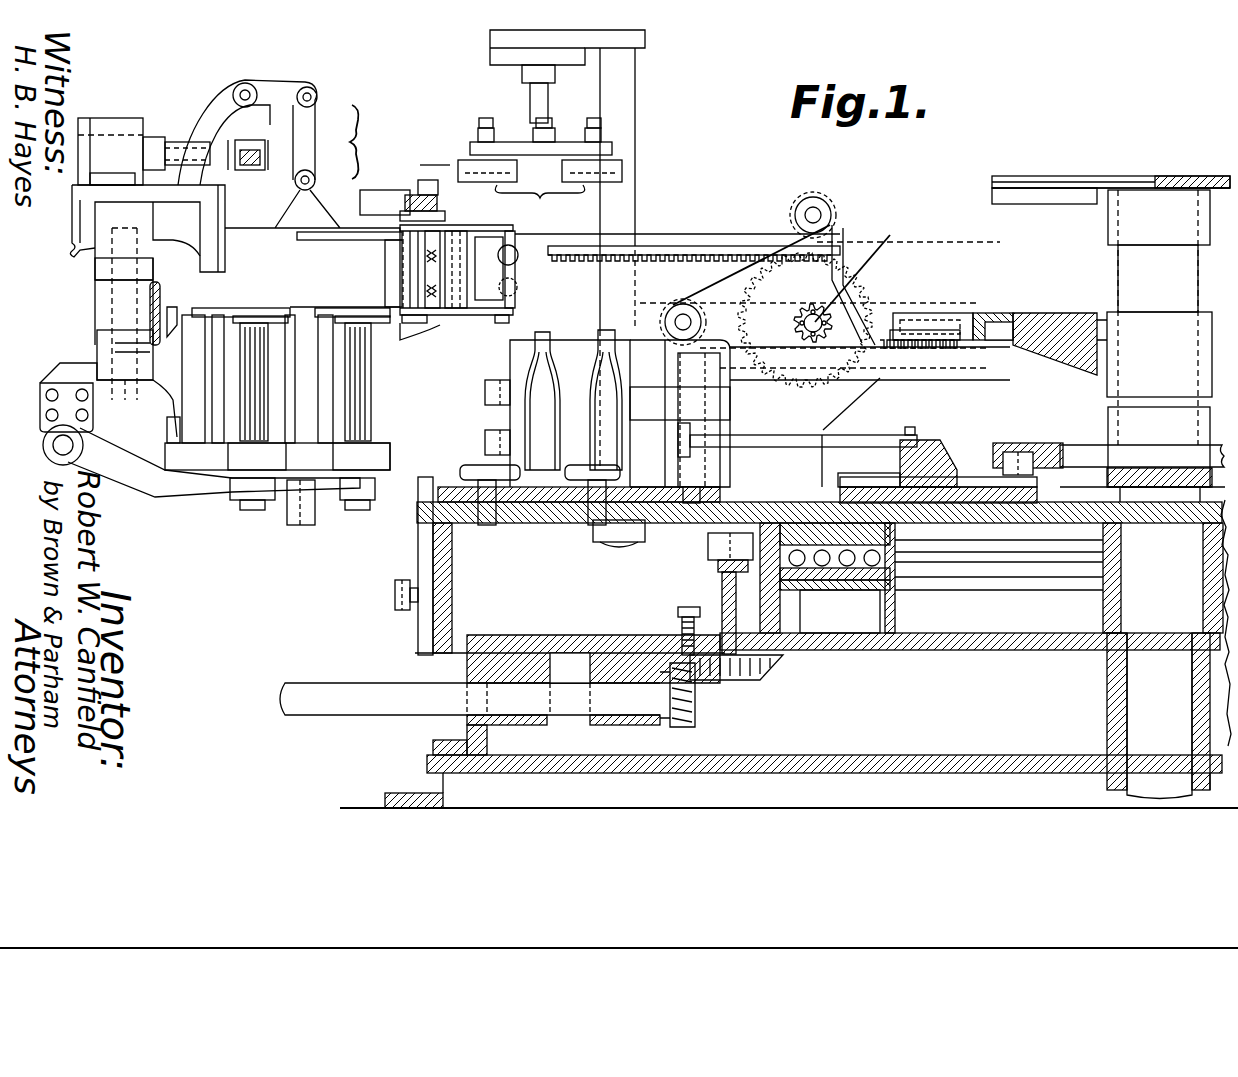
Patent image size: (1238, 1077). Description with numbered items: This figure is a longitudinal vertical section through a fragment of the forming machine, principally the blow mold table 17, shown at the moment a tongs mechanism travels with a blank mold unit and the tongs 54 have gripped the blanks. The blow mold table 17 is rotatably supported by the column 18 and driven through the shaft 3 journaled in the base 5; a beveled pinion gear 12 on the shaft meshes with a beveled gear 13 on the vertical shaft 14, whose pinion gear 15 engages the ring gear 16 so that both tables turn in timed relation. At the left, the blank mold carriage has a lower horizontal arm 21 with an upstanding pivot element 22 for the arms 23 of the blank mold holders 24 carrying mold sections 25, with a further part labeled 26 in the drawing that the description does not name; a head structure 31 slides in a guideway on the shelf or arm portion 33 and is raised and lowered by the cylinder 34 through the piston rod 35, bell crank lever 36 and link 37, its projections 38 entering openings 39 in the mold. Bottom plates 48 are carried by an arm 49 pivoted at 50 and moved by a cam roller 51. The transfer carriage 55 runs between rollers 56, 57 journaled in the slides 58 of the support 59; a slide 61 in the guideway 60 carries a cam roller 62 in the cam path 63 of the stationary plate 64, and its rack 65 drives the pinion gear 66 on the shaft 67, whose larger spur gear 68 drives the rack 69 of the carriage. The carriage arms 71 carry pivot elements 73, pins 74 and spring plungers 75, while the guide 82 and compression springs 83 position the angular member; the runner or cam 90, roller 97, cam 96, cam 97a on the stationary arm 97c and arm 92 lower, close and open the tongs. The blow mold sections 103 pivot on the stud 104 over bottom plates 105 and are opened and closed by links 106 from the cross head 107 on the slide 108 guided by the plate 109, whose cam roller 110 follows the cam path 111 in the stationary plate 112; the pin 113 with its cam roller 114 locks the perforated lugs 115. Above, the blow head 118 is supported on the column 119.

The shaft 3 is at (383, 690).
The base of the blow mold table 5 is at (467, 728).
The beveled pinion gear 12 is at (700, 715).
The beveled gear 13 is at (775, 680).
The vertical shaft 14 is at (722, 588).
The pinion gear 15 is at (718, 565).
The ring gear 16 is at (708, 545).
The blow mold table 17 is at (418, 543).
The column 18 is at (1110, 272).
The lower horizontal arm 21 is at (95, 372).
The pivot element 22 is at (125, 386).
The arms of blank mold holders 23 is at (170, 398).
The blank mold holders 24 is at (172, 437).
The mold sections 25 is at (178, 325).
The guide rod 26 is at (215, 445).
The head structure 31 is at (285, 236).
The shelf or arm portion 33 is at (190, 190).
The cylinder 34 is at (100, 125).
The piston rod 35 is at (172, 148).
The bell crank lever 36 is at (272, 88).
The link 37 is at (305, 135).
The projections 38 is at (262, 308).
The openings 39 is at (215, 308).
The bottom plates 48 is at (309, 476).
The arm 49 is at (180, 490).
The pivot 50 is at (58, 450).
The cam roller 51 is at (305, 520).
The tongs 54 is at (410, 330).
The carriage 55 is at (695, 246).
The roller 56 is at (683, 300).
The roller 57 is at (825, 200).
The slides 58 is at (832, 225).
The support 59 is at (860, 395).
The guideway 60 is at (740, 345).
The slide 61 is at (940, 333).
The cam roller 62 is at (1005, 320).
The cam path 63 is at (990, 313).
The stationary plate 64 is at (1075, 318).
The rack 65 is at (893, 330).
The pinion gear 66 is at (798, 322).
The shaft 67 is at (857, 273).
The spur gear 68 is at (870, 285).
The rack 69 is at (722, 246).
The arms 71 is at (440, 250).
The pivot elements 73 is at (462, 318).
The pin 74 is at (518, 262).
The bolts or plungers 75 is at (520, 293).
The guide 82 is at (318, 240).
The compression springs 83 is at (395, 255).
The runner or cam 90 is at (440, 205).
The arm 92 is at (1195, 178).
The cam 96 is at (385, 187).
The roller 97 is at (428, 180).
The cam 97a is at (1020, 196).
The stationary arm 97c is at (1082, 180).
The blow mold sections 103 is at (515, 340).
The pivot element or stud 104 is at (700, 403).
The bottom plates 105 is at (470, 478).
The links 106 is at (775, 447).
The cross head 107 is at (930, 450).
The slide 108 is at (965, 477).
The plate 109 is at (860, 475).
The cam roller 110 is at (1033, 455).
The cam path 111 is at (1018, 450).
The stationary plate 112 is at (1090, 452).
The pin 113 is at (420, 480).
The cam roller 114 is at (395, 595).
The perforated lugs 115 is at (485, 440).
The blow head 118 is at (540, 166).
The column 119 is at (632, 118).